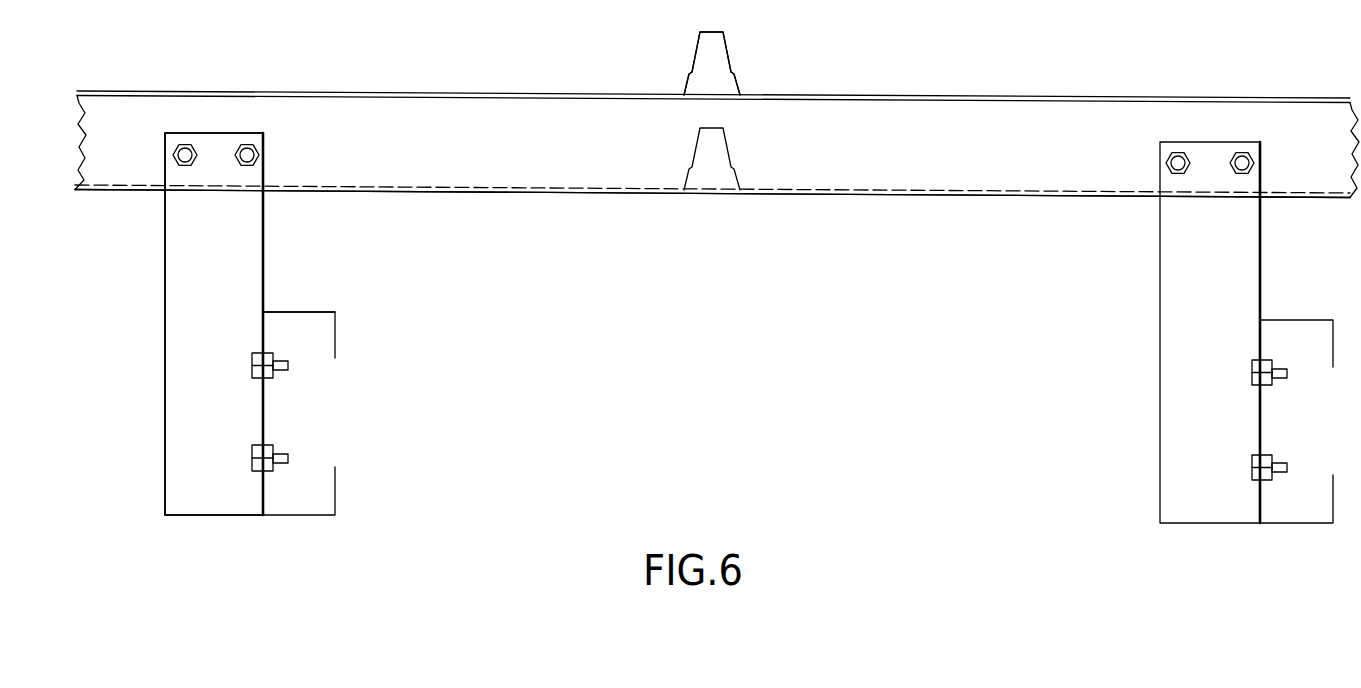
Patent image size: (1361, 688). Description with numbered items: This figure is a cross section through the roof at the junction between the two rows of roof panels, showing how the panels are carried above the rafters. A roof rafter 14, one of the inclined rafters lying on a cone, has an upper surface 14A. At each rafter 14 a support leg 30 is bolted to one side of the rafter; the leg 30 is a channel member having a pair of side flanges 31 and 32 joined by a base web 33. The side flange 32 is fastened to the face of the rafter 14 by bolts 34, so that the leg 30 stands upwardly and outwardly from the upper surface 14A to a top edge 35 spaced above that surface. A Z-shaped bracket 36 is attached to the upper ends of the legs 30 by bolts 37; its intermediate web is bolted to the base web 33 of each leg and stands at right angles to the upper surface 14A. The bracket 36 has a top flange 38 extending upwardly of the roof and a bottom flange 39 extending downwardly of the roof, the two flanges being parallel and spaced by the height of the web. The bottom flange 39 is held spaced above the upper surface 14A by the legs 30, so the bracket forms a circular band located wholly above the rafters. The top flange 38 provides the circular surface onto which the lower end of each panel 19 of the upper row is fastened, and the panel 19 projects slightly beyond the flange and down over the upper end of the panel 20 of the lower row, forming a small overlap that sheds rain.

The roof rafter 14 is at (335, 335).
The upper surface of the rafter 14A is at (293, 312).
The panel of the upper row 19 is at (918, 95).
The panel of the lower row 20 is at (1018, 193).
The support leg 30 is at (192, 520).
The side flange 31 is at (163, 327).
The side flange 32 is at (1260, 415).
The base web 33 is at (212, 450).
The bolts 34 is at (250, 462).
The top edge of the leg 35 is at (233, 133).
The Z-shaped bracket 36 is at (597, 138).
The bolts 37 is at (186, 142).
The top flange 38 is at (822, 95).
The bottom flange 39 is at (900, 192).